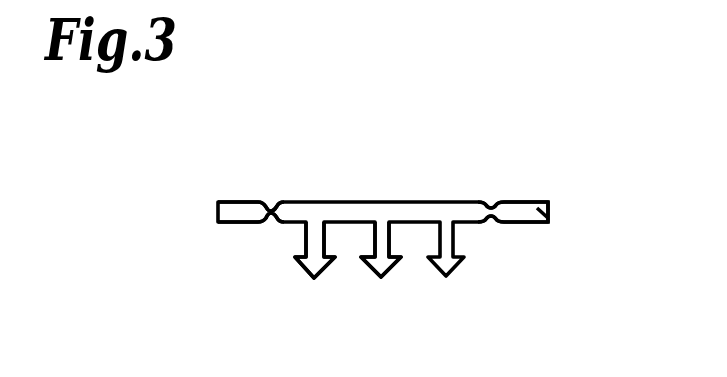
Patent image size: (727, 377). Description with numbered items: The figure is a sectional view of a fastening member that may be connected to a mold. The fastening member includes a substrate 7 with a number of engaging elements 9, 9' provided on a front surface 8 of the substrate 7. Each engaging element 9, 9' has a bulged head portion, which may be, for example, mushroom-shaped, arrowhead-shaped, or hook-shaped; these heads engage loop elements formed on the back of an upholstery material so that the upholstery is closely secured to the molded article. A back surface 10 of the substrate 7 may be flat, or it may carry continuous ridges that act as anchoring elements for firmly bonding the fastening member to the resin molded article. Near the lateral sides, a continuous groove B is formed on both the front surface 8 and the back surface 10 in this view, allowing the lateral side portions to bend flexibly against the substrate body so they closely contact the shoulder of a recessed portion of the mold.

The back surface 10 is at (440, 202).
The front surface 8 is at (282, 223).
The engaging element 9' is at (315, 285).
The engaging element 9 is at (382, 285).
The continuous groove B is at (490, 224).
The substrate 7 is at (548, 222).